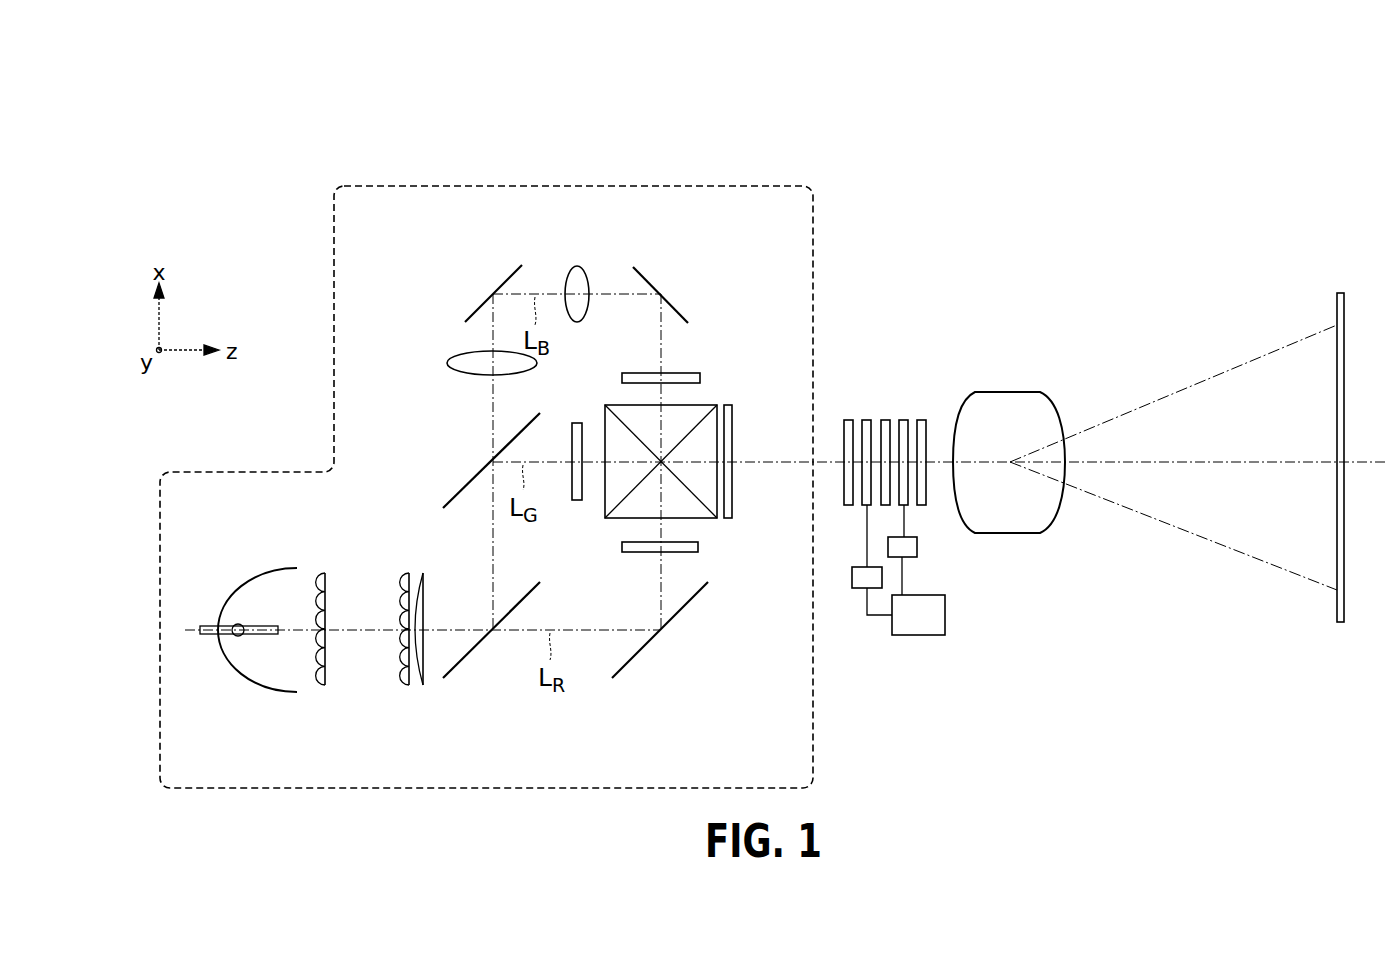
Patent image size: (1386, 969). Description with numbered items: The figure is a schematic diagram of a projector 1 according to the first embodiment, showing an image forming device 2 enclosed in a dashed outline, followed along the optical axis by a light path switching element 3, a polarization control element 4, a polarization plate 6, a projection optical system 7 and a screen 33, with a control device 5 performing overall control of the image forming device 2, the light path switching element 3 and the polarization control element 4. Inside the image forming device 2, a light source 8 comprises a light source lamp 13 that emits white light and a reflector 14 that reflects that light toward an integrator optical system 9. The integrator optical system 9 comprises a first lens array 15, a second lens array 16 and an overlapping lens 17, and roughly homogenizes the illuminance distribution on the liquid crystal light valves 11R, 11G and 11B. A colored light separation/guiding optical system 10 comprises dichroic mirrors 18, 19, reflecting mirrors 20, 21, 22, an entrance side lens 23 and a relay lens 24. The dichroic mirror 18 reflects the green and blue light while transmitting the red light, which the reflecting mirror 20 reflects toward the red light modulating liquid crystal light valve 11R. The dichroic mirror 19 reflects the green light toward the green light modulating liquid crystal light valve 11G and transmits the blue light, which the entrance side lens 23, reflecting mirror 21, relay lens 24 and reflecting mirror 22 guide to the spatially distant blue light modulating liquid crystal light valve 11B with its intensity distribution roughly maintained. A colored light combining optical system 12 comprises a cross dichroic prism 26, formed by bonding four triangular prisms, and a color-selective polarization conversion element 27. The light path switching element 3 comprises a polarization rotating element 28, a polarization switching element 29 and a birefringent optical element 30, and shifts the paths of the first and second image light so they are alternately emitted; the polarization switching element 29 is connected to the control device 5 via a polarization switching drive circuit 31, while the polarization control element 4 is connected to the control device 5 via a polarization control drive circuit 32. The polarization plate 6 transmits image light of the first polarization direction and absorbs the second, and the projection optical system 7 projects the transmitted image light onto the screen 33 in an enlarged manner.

The projector 1 is at (842, 160).
The image forming device 2 is at (813, 251).
The light path switching element 3 is at (922, 358).
The polarization control element 4 is at (904, 418).
The control device 5 is at (915, 635).
The polarization plate 6 is at (922, 418).
The projection optical system 7 is at (990, 392).
The light source 8 is at (256, 563).
The integrator optical system 9 is at (367, 568).
The colored light separation/guiding optical system 10 is at (418, 508).
The blue light modulating liquid crystal light valve 11B is at (700, 378).
The green light modulating liquid crystal light valve 11G is at (577, 500).
The red light modulating liquid crystal light valve 11R is at (698, 547).
The colored light combining optical system 12 is at (709, 520).
The light source lamp 13 is at (245, 636).
The reflector 14 is at (250, 682).
The first lens array 15 is at (323, 690).
The second lens array 16 is at (405, 690).
The overlapping lens 17 is at (423, 690).
The dichroic mirror 18 is at (483, 647).
The dichroic mirror 19 is at (468, 490).
The reflecting mirror 20 is at (650, 645).
The reflecting mirror 21 is at (501, 284).
The reflecting mirror 22 is at (658, 288).
The entrance side lens 23 is at (447, 363).
The relay lens 24 is at (577, 265).
The cross dichroic prism 26 is at (708, 522).
The color-selective polarization conversion element 27 is at (732, 498).
The polarization rotating element 28 is at (848, 418).
The polarization switching element 29 is at (867, 418).
The birefringent optical element 30 is at (886, 418).
The polarization switching drive circuit 31 is at (852, 580).
The polarization control drive circuit 32 is at (918, 547).
The screen 33 is at (1340, 292).